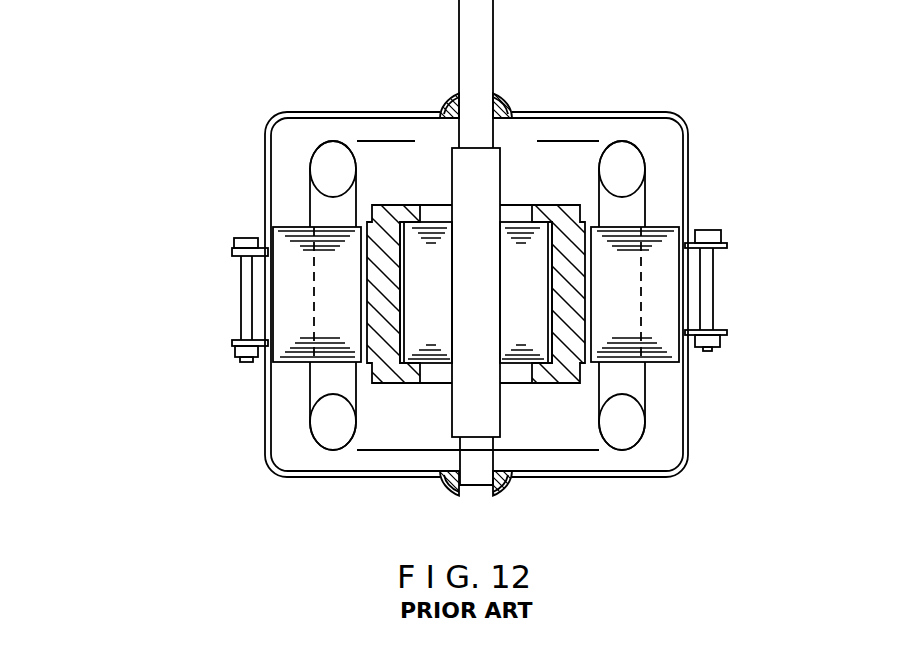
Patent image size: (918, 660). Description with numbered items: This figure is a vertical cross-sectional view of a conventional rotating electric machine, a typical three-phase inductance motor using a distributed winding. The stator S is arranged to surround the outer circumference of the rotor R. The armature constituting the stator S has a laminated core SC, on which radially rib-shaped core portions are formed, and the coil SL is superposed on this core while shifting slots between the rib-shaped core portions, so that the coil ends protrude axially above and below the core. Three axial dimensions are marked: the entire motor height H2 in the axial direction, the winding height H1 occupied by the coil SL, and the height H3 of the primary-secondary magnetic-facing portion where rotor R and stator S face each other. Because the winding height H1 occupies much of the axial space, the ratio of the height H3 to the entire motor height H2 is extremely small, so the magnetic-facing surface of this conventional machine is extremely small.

The rotor R is at (543, 190).
The stator S is at (660, 172).
The coil SL is at (647, 140).
The laminated core SC is at (670, 280).
The winding height H1 is at (303, 453).
The entire motor height H2 is at (270, 480).
The height of the primary-secondary magnetic-facing portion H3 is at (360, 361).